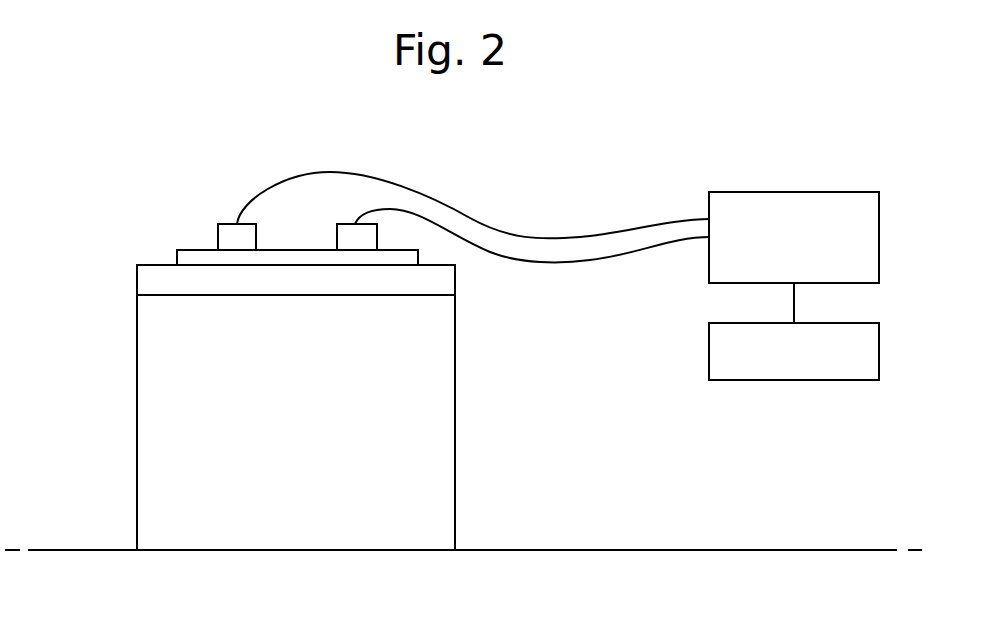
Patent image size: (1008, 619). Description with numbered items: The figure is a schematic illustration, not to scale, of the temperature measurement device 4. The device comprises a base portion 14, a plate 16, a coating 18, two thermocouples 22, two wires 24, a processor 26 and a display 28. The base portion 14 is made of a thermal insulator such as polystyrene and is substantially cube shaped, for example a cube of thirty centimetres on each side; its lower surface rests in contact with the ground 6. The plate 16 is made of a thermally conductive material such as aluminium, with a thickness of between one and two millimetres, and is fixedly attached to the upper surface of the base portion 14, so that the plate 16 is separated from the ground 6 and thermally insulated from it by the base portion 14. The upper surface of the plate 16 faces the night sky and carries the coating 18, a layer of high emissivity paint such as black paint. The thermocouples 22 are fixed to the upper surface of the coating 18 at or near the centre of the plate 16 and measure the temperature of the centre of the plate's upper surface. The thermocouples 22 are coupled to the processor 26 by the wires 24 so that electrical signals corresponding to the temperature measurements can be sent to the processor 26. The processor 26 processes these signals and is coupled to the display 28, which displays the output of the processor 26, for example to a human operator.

The temperature measurement device 4 is at (118, 122).
The ground 6 is at (607, 550).
The base portion 14 is at (160, 389).
The plate 16 is at (152, 279).
The coating 18 is at (192, 258).
The thermocouples 22 is at (227, 230).
The wires 24 is at (526, 233).
The processor 26 is at (795, 205).
The display 28 is at (781, 358).